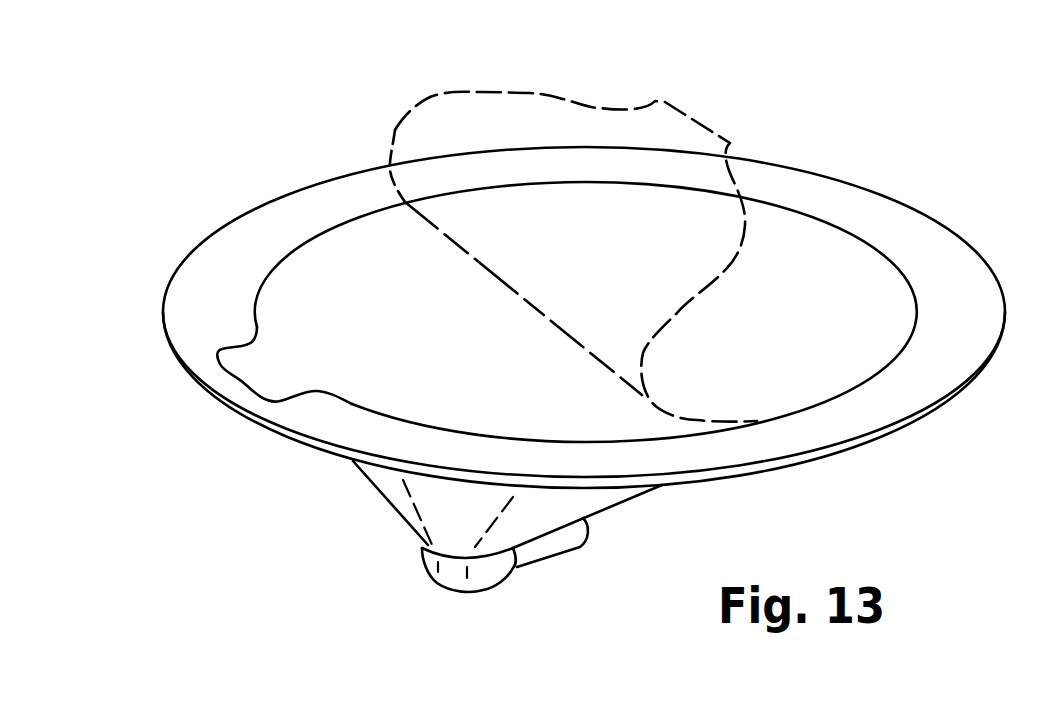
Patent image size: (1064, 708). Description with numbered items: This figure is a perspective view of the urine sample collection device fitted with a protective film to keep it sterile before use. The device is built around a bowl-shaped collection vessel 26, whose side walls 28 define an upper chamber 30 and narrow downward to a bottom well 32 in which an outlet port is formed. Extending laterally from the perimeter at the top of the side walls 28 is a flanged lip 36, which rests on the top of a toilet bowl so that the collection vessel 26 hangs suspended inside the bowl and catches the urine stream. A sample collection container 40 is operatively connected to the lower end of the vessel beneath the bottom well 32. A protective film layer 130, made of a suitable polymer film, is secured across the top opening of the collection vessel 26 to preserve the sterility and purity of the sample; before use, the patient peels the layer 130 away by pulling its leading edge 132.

The collection vessel 26 is at (250, 237).
The side walls 28 is at (358, 319).
The upper chamber 30 is at (389, 250).
The bottom well 32 is at (450, 582).
The flanged lip 36 is at (787, 183).
The sample collection container 40 is at (567, 545).
The protective film layer 130 is at (545, 117).
The leading edge 132 is at (226, 366).